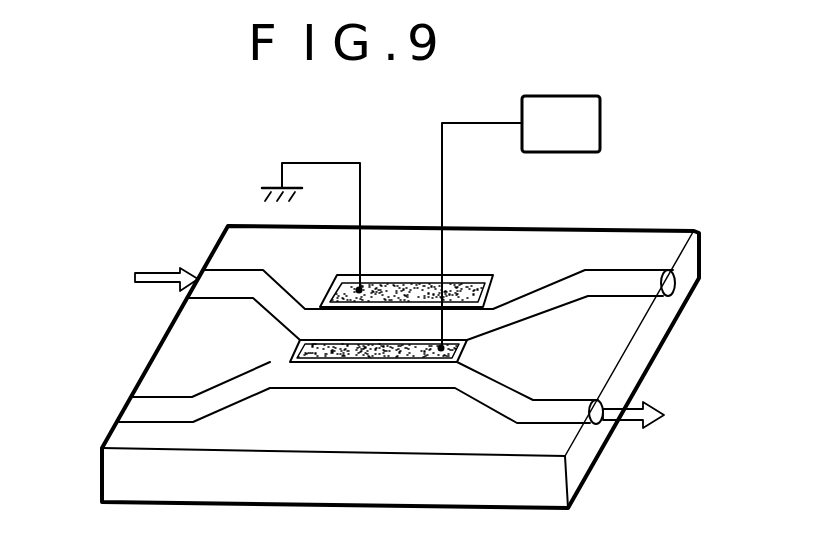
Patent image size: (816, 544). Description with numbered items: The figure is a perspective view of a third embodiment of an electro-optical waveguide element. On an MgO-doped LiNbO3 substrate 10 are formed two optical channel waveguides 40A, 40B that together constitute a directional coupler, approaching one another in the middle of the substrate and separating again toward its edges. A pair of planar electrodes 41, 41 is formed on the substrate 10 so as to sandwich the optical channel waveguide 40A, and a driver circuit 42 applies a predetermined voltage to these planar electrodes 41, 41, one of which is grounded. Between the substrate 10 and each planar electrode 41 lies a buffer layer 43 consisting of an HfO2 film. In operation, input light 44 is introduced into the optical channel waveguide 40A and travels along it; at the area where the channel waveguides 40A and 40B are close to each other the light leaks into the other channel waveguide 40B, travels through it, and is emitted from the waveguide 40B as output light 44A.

The LiNbO3 substrate 10 is at (125, 442).
The optical channel waveguide 40A is at (592, 280).
The optical channel waveguide 40B is at (513, 408).
The planar electrodes 41 is at (483, 276).
The driver circuit 42 is at (576, 139).
The buffer layer 43 is at (322, 305).
The input light 44 is at (168, 285).
The output light 44A is at (645, 398).